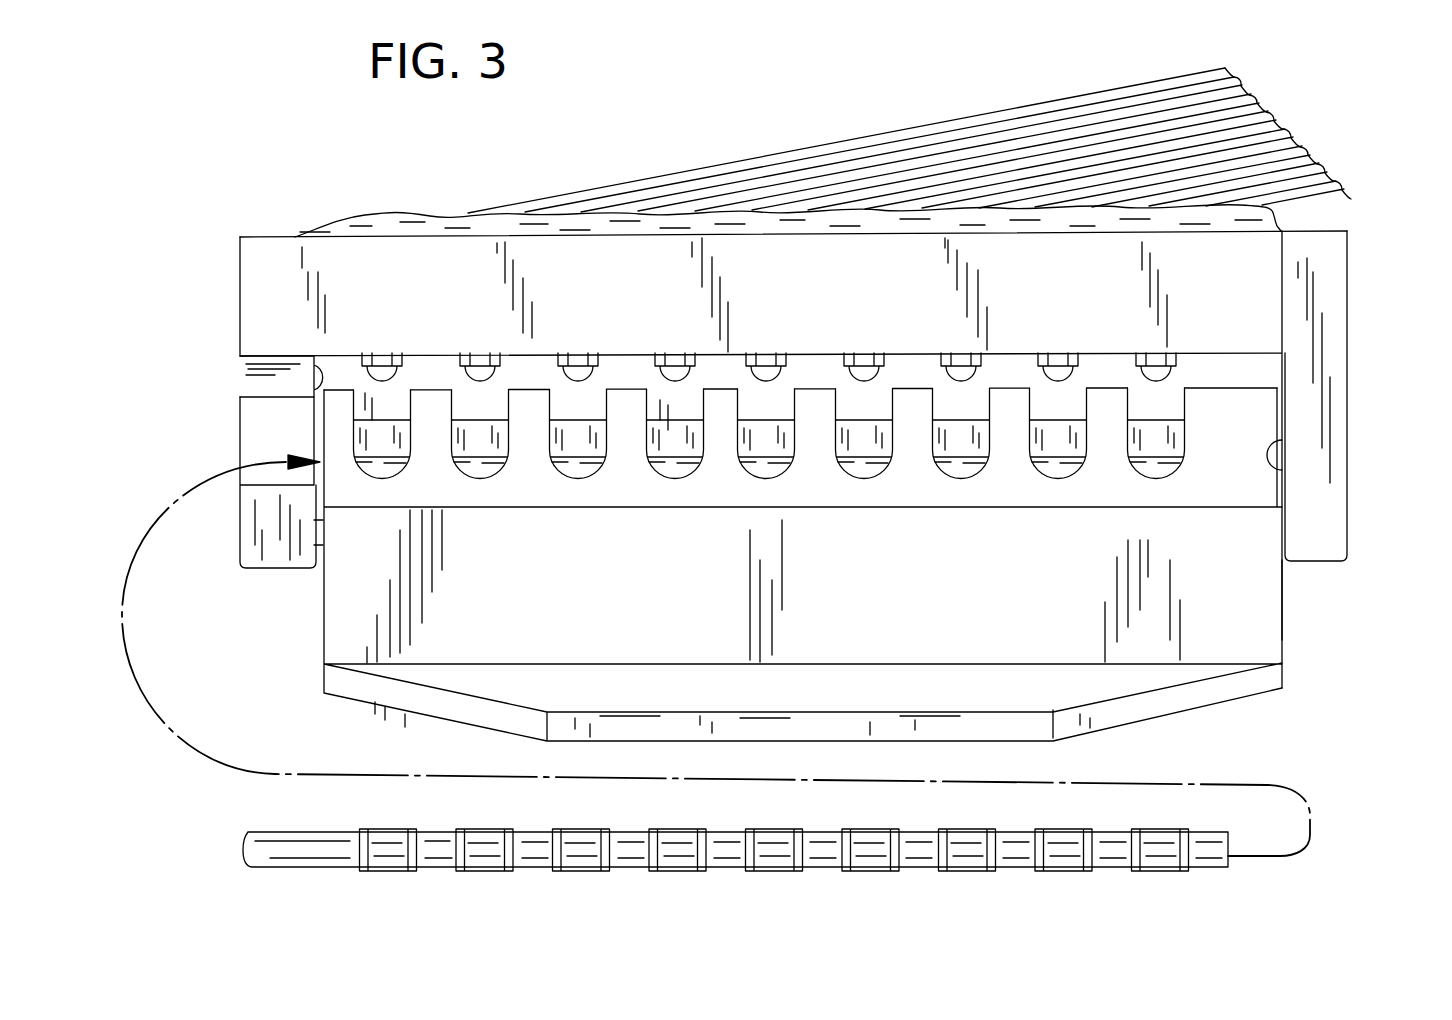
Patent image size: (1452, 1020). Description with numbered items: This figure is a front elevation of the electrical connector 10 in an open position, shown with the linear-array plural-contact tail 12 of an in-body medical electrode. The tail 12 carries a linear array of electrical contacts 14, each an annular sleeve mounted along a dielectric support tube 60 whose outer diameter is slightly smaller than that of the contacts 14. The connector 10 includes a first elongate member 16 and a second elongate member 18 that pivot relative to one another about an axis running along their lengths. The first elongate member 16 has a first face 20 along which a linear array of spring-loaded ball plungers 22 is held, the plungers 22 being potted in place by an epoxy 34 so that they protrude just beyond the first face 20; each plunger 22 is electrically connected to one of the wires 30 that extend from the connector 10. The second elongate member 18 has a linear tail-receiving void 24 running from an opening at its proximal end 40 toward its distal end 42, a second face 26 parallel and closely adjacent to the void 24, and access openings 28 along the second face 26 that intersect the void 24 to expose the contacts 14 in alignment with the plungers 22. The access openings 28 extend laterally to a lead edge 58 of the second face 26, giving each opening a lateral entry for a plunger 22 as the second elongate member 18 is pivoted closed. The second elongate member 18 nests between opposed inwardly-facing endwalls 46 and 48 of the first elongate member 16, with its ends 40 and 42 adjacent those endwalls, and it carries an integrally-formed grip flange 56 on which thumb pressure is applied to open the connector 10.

The electrical connector 10 is at (266, 218).
The plural-contact tail 12 is at (286, 828).
The electrical contacts 14 is at (585, 865).
The first elongate member 16 is at (1305, 255).
The second elongate member 18 is at (1213, 616).
The first face 20 is at (1240, 355).
The spring-loaded ball plungers 22 is at (572, 354).
The tail-receiving void 24 is at (479, 467).
The second face 26 is at (333, 443).
The access openings 28 is at (470, 405).
The wires 30 is at (734, 168).
The epoxy 34 is at (358, 216).
The proximal end 40 is at (324, 612).
The distal end 42 is at (1282, 599).
The endwall 46 is at (314, 397).
The endwall 48 is at (1280, 462).
The grip flange 56 is at (1027, 723).
The lead edge 58 is at (355, 391).
The dielectric support tube 60 is at (740, 862).